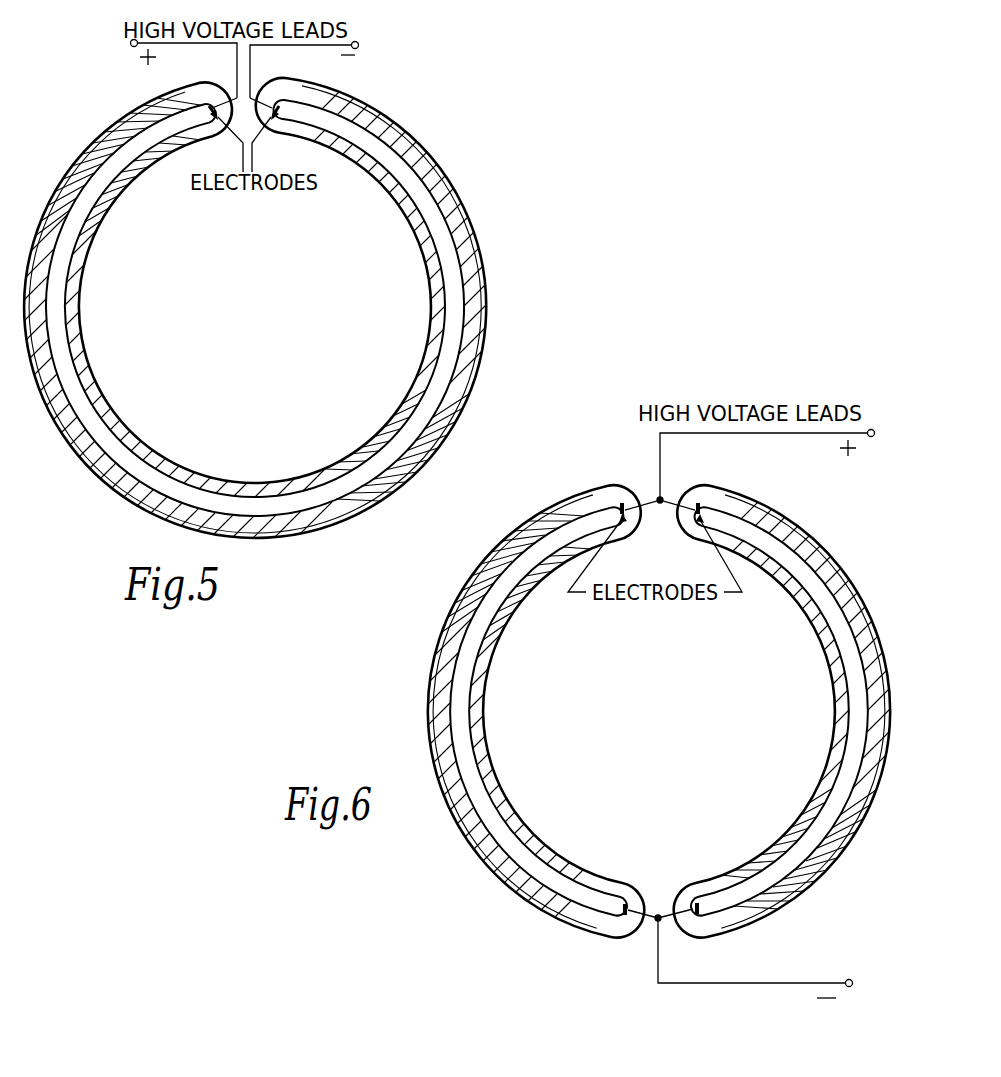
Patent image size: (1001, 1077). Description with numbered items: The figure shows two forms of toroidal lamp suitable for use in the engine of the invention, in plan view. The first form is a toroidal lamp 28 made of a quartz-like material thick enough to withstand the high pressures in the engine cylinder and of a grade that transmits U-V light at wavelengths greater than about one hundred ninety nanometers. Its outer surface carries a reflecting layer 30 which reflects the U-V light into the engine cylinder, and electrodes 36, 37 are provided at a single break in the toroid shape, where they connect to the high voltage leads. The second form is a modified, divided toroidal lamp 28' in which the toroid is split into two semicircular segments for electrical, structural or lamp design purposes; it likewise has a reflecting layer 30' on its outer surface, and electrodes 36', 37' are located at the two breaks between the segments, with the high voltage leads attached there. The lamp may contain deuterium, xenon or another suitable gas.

In FIG. 5, the toroidal lamp 28 is at (270, 308).
In FIG. 5, the reflecting layer 30 is at (286, 309).
In FIG. 5, the electrode 36 is at (177, 95).
In FIG. 5, the electrode 37 is at (320, 94).
In FIG. 6, the toroidal lamp 28' is at (633, 711).
In FIG. 6, the reflecting layer 30' is at (632, 711).
In FIG. 6, the electrode 36' is at (660, 533).
In FIG. 6, the electrode 37' is at (661, 876).